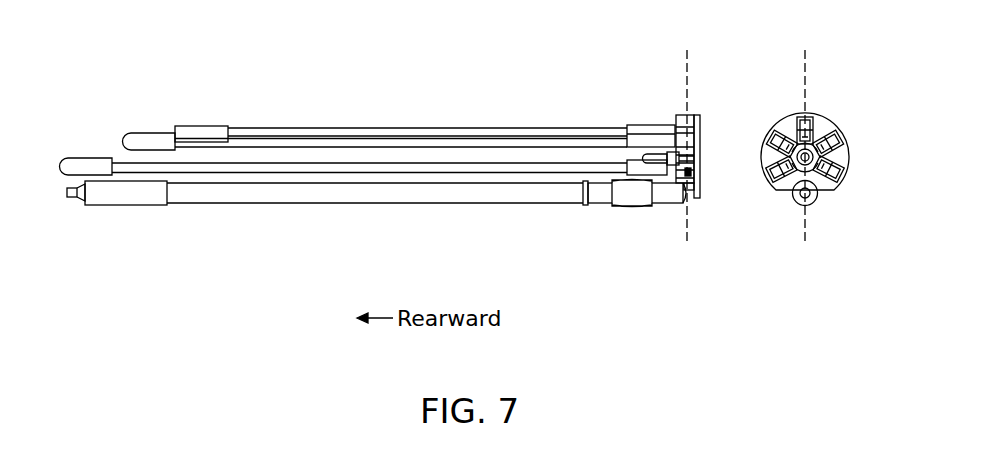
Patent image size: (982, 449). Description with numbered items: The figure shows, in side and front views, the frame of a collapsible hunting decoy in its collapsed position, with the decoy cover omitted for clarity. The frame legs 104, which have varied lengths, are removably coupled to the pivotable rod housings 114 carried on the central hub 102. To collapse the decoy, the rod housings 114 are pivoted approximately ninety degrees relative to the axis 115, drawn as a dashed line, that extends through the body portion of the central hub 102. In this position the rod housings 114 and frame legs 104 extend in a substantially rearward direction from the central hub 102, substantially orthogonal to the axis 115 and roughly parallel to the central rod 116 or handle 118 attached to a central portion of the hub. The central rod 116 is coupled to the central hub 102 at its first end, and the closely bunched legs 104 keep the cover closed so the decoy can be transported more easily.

The central hub 102 is at (700, 140).
The frame legs 104 is at (278, 121).
The pivotable rod housings 114 is at (648, 126).
The axis 115 is at (749, 135).
The central rod 116 is at (652, 163).
The handle 118 is at (138, 202).